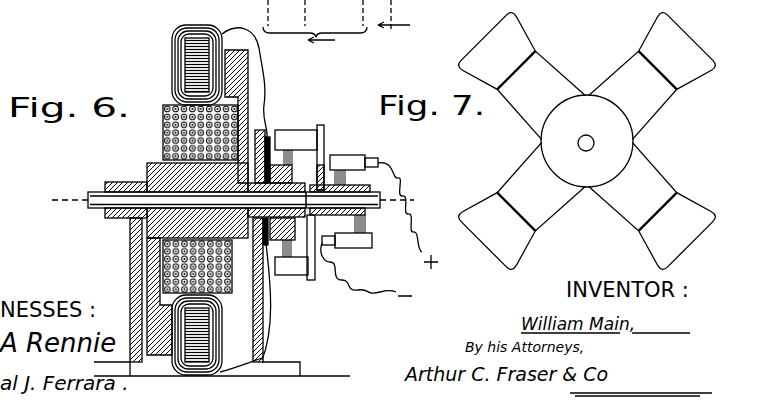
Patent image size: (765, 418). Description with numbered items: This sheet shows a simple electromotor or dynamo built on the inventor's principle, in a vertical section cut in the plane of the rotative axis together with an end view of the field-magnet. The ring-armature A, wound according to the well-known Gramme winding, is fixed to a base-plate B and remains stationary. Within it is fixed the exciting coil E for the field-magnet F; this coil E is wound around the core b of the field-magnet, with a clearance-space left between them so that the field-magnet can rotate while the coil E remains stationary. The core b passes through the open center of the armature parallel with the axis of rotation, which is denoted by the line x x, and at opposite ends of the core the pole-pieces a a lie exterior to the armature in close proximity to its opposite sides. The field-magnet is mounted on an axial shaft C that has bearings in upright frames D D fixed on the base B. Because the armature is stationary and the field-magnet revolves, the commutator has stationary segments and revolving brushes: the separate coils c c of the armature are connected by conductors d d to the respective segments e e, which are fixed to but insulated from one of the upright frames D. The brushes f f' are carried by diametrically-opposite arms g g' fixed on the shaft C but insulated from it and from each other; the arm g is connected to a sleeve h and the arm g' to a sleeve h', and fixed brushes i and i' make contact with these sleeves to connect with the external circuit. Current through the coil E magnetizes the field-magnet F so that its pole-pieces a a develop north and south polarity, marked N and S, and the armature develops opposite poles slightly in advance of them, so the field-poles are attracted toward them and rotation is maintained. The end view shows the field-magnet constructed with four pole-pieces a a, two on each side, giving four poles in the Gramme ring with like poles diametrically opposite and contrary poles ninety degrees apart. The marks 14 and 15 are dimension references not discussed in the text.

In FIG. 6, the ring-armature A is at (247, 304).
In FIG. 6, the base-plate B is at (320, 378).
In FIG. 6, the axial shaft C is at (104, 186).
In FIG. 6, the upright frames D is at (130, 246).
In FIG. 6, the exciting-coil E is at (163, 136).
In FIG. 6, the field-magnet F is at (197, 177).
In FIG. 7, the field-magnet F is at (593, 144).
In FIG. 6, the north pole N is at (236, 116).
In FIG. 7, the north pole N is at (587, 141).
In FIG. 6, the south pole S is at (159, 296).
In FIG. 7, the south pole S is at (587, 141).
In FIG. 7, the pole-pieces a is at (587, 141).
In FIG. 6, the core b is at (197, 223).
In FIG. 6, the armature coils c is at (195, 200).
In FIG. 6, the conductors d is at (243, 191).
In FIG. 6, the commutator segments e is at (292, 171).
In FIG. 6, the commutator brush f is at (296, 147).
In FIG. 6, the commutator brush f' is at (291, 258).
In FIG. 6, the brush arm g is at (328, 157).
In FIG. 6, the brush arm g' is at (322, 253).
In FIG. 6, the sleeve h is at (352, 177).
In FIG. 6, the sleeve h' is at (372, 220).
In FIG. 6, the fixed brush i is at (384, 204).
In FIG. 6, the fixed brush i' is at (366, 258).
In FIG. 6, the axis of rotation x is at (232, 201).
In FIG. 6, the dimension reference 14 is at (394, 29).
In FIG. 6, the dimension reference 15 is at (315, 30).